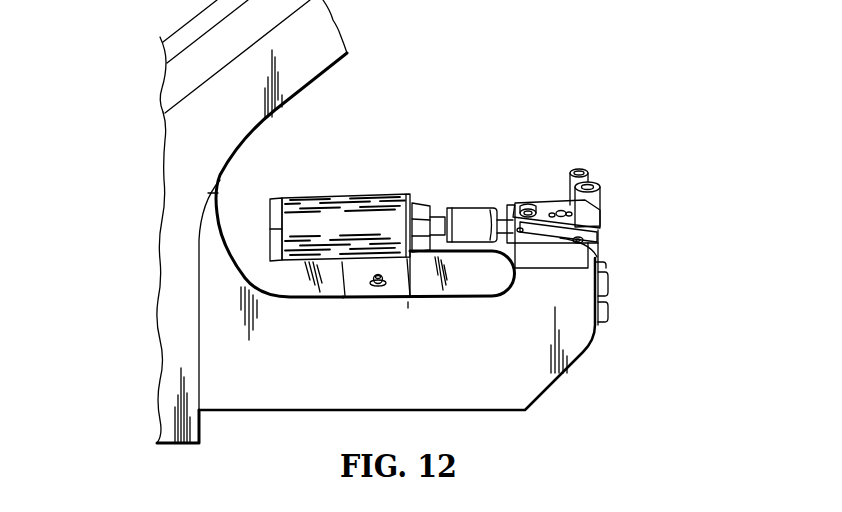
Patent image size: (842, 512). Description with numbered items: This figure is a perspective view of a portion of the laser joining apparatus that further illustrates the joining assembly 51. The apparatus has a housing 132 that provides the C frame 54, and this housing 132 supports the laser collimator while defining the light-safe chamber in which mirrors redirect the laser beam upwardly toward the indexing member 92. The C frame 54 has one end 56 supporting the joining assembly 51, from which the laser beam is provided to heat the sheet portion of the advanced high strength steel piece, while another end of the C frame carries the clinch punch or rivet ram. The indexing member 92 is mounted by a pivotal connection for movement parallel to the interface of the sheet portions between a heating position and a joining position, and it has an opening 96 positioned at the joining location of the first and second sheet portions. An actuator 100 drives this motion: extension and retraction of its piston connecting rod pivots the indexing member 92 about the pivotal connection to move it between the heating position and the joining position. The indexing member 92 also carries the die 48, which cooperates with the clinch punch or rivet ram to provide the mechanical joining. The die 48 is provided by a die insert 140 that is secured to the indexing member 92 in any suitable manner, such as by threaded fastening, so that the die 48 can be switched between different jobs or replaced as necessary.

The C frame 54 is at (162, 38).
The housing 132 is at (173, 155).
The actuator 100 is at (340, 195).
The opening 96 is at (578, 169).
The die 48 is at (590, 181).
The joining assembly 51 is at (703, 200).
The die insert 140 is at (581, 226).
The indexing member 92 is at (598, 254).
The one end 56 is at (578, 363).